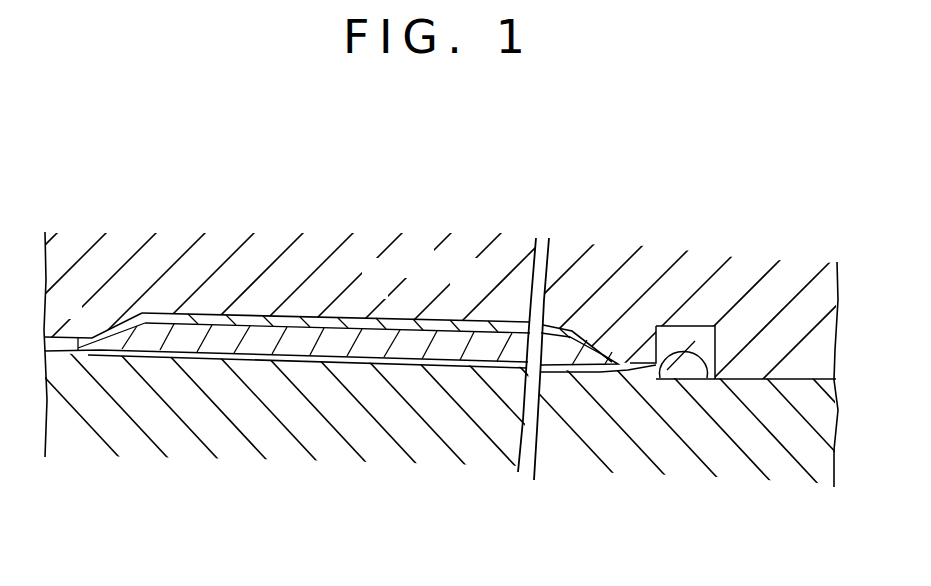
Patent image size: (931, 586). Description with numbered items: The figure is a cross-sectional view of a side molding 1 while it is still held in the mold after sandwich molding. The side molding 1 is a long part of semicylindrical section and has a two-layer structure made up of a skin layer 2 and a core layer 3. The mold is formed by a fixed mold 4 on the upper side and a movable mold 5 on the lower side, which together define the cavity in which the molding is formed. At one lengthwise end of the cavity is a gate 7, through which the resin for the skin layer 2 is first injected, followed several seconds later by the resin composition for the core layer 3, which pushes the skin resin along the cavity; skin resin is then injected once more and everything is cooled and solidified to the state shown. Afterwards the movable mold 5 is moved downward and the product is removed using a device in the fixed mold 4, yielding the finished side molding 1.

The side molding 1 is at (476, 276).
The skin layer 2 is at (365, 320).
The core layer 3 is at (449, 338).
The fixed mold 4 is at (267, 260).
The movable mold 5 is at (290, 455).
The gate 7 is at (73, 338).